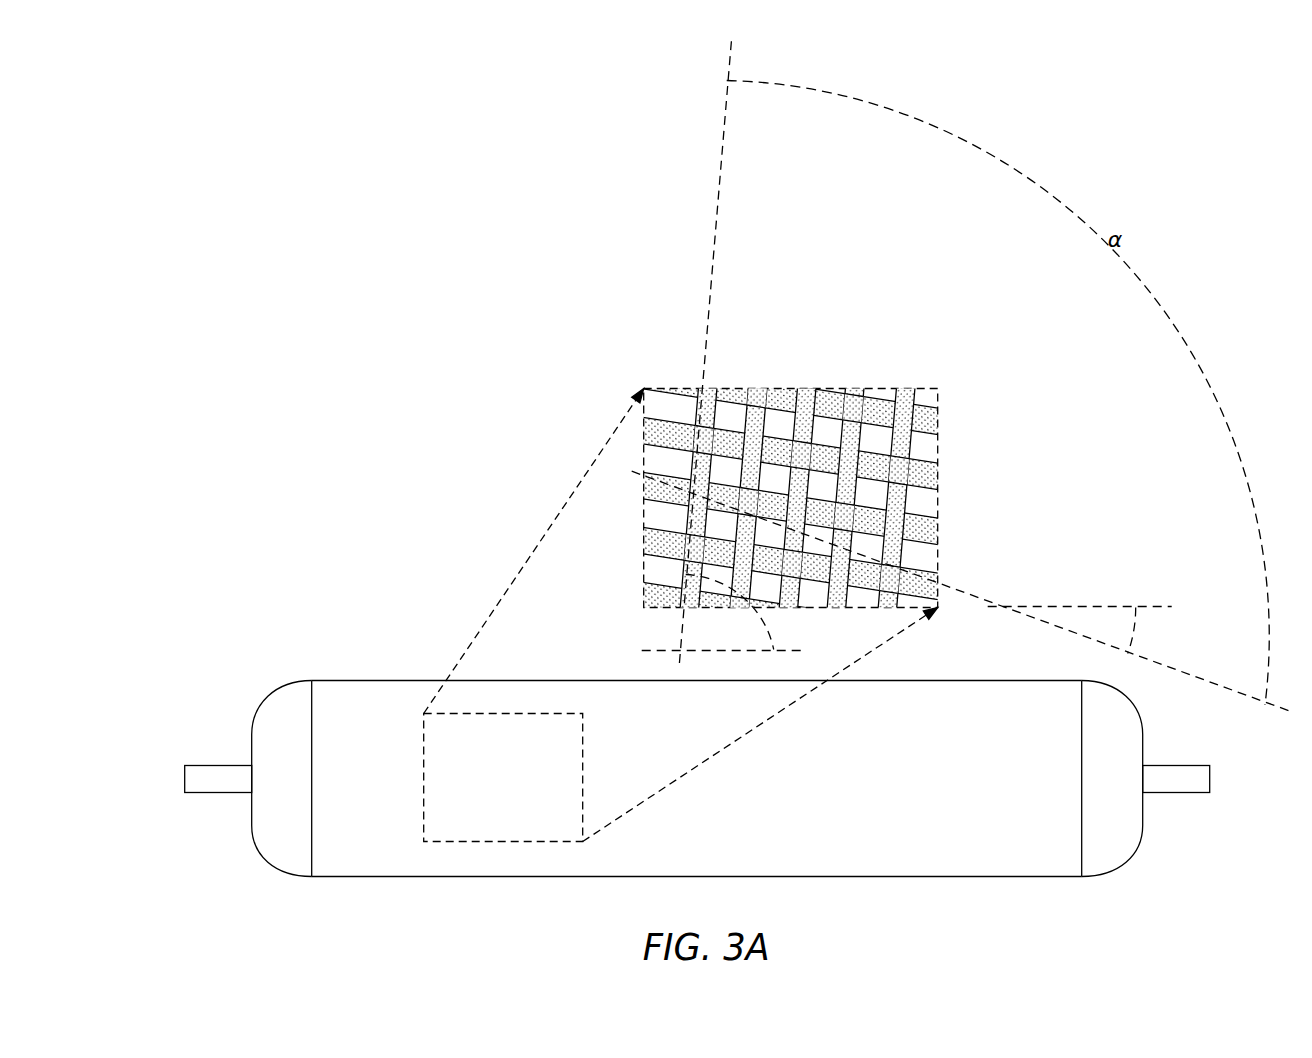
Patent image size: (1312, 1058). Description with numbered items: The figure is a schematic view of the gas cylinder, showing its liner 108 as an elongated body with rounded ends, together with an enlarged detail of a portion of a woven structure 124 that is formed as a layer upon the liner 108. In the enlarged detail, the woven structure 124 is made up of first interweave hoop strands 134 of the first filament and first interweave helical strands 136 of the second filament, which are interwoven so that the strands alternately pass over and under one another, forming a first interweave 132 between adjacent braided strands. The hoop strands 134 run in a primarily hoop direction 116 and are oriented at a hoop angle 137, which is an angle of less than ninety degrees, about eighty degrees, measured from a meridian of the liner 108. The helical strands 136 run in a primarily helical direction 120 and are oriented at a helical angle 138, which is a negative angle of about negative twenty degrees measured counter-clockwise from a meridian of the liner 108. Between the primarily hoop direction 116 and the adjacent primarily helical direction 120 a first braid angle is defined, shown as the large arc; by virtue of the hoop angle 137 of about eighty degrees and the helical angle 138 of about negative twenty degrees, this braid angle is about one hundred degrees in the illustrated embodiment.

The liner 108 is at (353, 680).
The primarily hoop direction 116 is at (680, 622).
The primarily helical direction 120 is at (990, 600).
The woven structure 124 is at (645, 374).
The first interweave 132 is at (825, 482).
The first interweave hoop strands 134 is at (755, 389).
The first interweave helical strands 136 is at (933, 425).
The hoop angle 137 is at (774, 630).
The helical angle 138 is at (1138, 620).